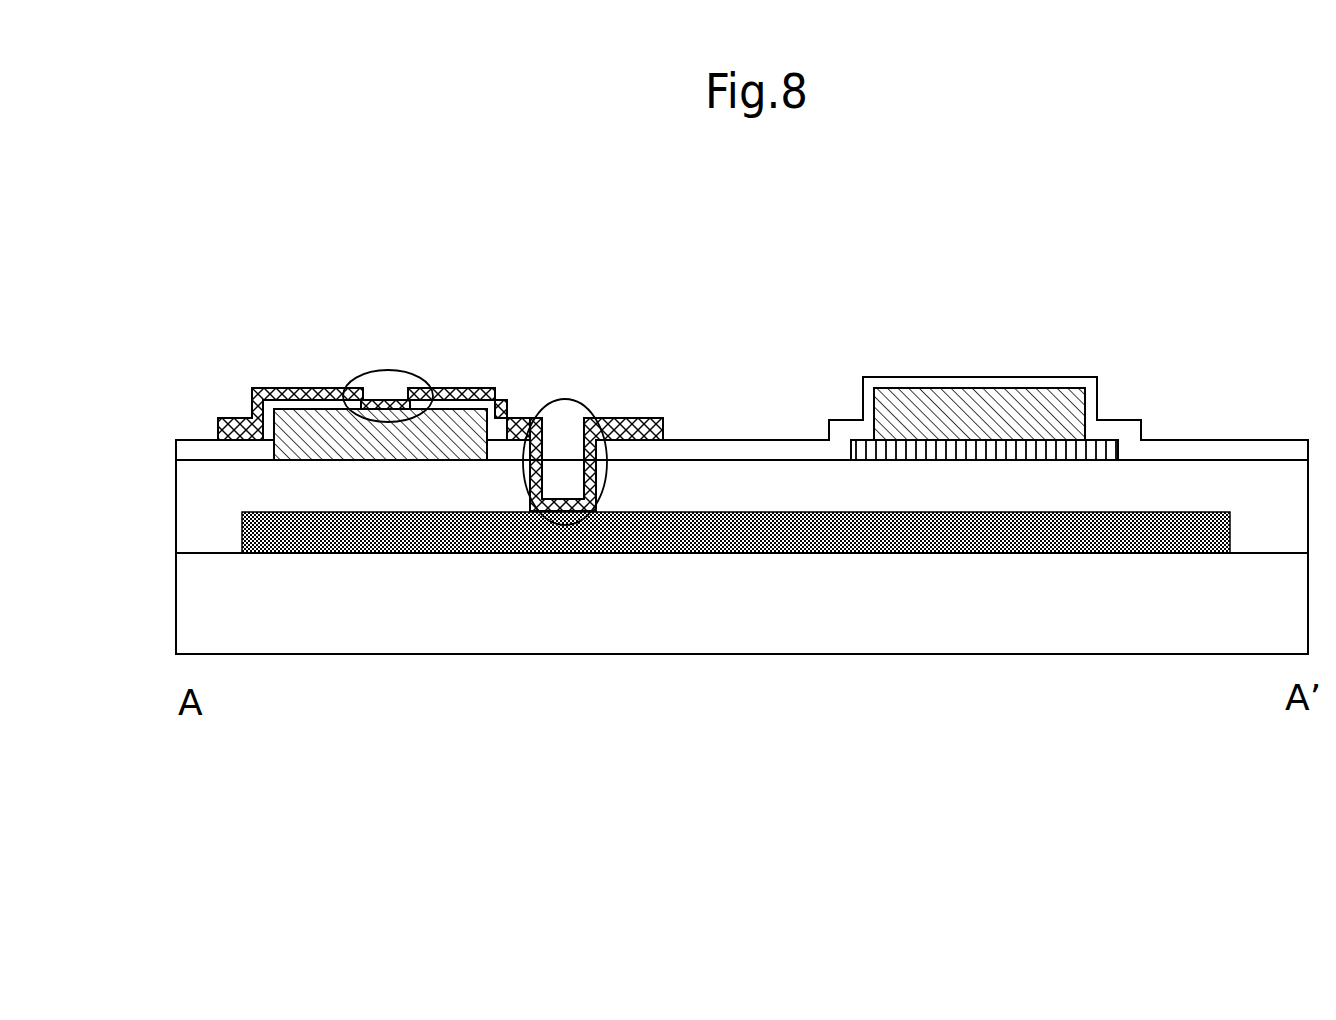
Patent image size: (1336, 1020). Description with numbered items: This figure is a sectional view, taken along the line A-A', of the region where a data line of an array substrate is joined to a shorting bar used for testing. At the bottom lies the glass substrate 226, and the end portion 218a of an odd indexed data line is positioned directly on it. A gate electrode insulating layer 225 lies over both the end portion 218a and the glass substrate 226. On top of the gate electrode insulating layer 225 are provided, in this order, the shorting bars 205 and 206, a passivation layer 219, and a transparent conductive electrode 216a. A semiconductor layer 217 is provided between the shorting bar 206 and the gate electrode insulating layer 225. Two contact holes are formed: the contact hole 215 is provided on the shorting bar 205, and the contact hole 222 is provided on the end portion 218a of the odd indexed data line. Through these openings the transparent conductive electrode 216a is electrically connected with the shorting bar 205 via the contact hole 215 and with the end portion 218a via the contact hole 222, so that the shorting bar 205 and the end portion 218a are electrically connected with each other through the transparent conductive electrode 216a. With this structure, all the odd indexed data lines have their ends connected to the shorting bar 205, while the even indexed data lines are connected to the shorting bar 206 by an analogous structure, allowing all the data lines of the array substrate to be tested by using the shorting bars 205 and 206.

The shorting bar 205 is at (330, 430).
The shorting bar 206 is at (997, 408).
The contact hole 215 is at (408, 367).
The transparent conductive electrode 216a is at (282, 388).
The semiconductor layer 217 is at (898, 452).
The end portion of the odd indexed data line 218a is at (280, 529).
The passivation layer 219 is at (218, 453).
The contact hole 222 is at (585, 400).
The gate electrode insulating layer 225 is at (242, 493).
The glass substrate 226 is at (213, 607).